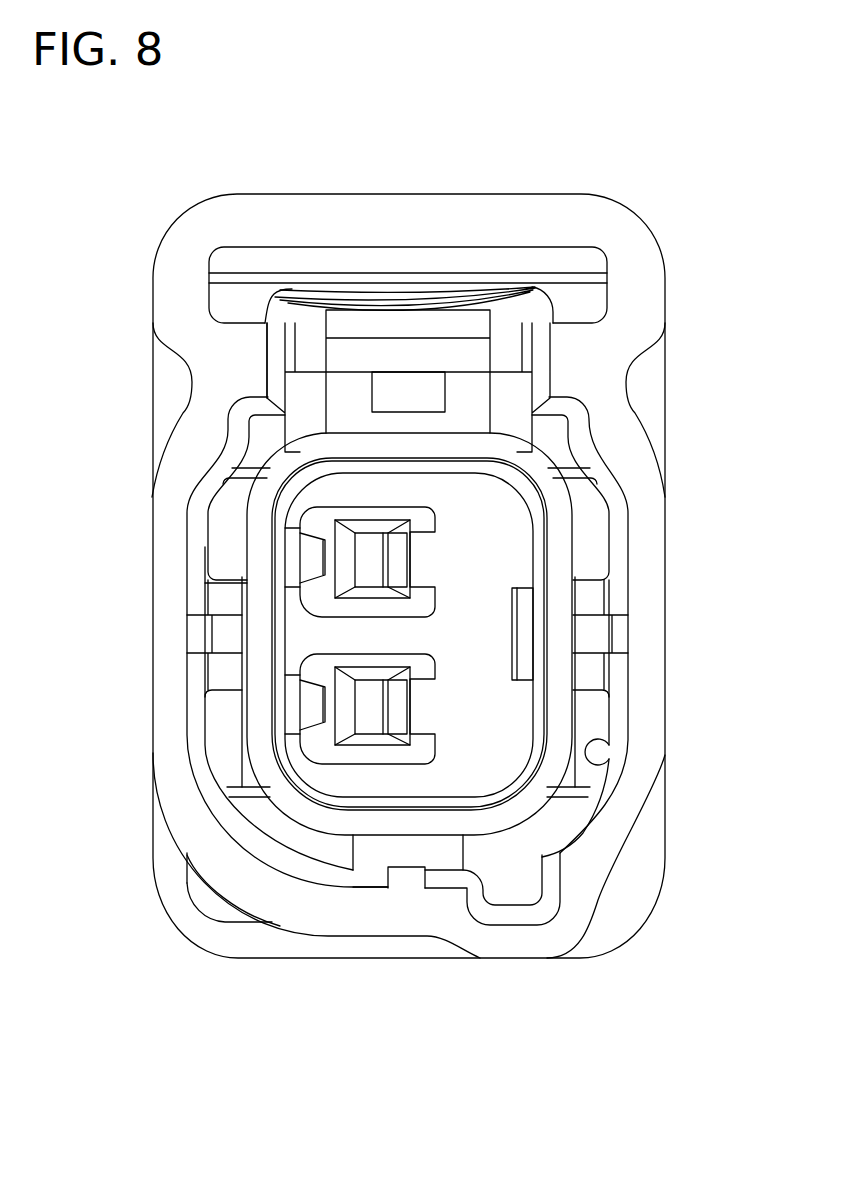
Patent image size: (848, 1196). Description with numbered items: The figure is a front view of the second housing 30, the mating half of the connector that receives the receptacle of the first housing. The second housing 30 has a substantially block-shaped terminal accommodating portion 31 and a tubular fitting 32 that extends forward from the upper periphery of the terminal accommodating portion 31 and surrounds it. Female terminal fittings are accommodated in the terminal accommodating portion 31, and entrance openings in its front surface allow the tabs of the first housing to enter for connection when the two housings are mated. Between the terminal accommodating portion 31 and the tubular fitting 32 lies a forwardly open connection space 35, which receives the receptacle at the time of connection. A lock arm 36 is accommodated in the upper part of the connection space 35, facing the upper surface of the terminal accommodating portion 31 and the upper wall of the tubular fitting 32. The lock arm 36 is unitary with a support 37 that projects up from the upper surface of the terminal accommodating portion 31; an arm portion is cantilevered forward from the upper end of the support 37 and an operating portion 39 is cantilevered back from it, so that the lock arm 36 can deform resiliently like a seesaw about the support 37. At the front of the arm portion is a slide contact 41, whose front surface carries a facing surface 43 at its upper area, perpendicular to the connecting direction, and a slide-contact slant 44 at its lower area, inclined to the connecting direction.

The second housing 30 is at (652, 175).
The terminal accommodating portion 31 is at (563, 538).
The tubular fitting 32 is at (332, 910).
The connection space 35 is at (609, 745).
The lock arm 36 is at (556, 302).
The support 37 is at (472, 397).
The operating portion 39 is at (418, 294).
The slide contact 41 is at (327, 324).
The facing surface 43 is at (384, 322).
The slide-contact slant 44 is at (357, 353).